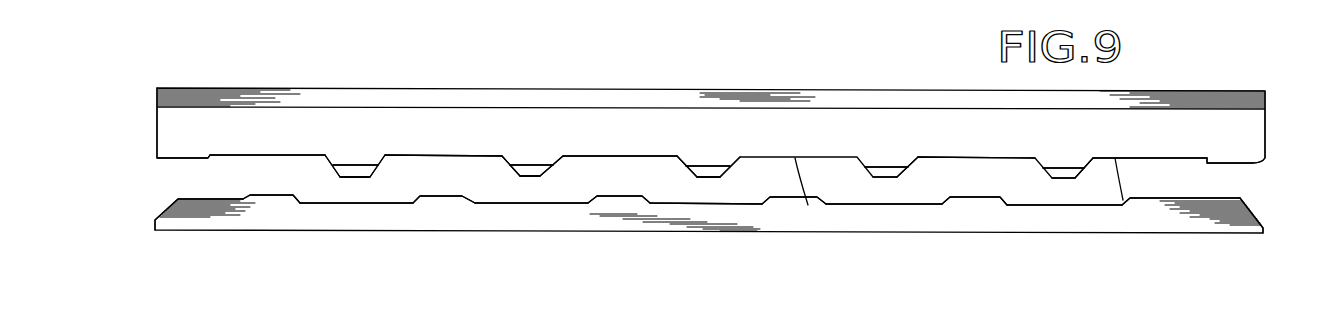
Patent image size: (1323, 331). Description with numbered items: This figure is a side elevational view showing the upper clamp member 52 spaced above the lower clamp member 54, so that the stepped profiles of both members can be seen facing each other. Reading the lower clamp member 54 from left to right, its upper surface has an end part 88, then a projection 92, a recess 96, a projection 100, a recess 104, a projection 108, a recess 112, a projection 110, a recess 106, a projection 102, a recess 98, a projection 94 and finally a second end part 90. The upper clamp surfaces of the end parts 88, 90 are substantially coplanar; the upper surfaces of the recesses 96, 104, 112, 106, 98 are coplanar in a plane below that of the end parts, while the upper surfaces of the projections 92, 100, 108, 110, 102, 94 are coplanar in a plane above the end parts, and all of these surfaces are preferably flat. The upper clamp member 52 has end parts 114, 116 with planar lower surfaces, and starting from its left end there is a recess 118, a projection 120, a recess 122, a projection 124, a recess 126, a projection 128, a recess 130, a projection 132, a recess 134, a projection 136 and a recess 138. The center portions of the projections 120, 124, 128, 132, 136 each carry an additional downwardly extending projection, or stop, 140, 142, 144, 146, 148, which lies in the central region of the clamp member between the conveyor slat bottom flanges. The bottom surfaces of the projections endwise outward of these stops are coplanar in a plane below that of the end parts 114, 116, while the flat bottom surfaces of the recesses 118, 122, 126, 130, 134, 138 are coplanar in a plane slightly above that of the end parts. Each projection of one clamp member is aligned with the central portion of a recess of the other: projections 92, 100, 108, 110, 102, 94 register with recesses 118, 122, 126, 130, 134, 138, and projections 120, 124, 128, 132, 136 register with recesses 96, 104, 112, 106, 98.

The upper clamp member 52 is at (819, 88).
The lower clamp member 54 is at (803, 237).
The end part 88 is at (216, 199).
The end part 90 is at (1220, 202).
The projection 92 is at (270, 197).
The projection 94 is at (1162, 198).
The recess 96 is at (402, 193).
The recess 98 is at (1028, 204).
The projection 100 is at (465, 195).
The projection 102 is at (963, 203).
The recess 104 is at (577, 203).
The recess 106 is at (857, 203).
The projection 108 is at (620, 195).
The projection 110 is at (818, 198).
The recess 112 is at (758, 204).
The end part 114 is at (175, 159).
The end part 116 is at (1258, 166).
The recess 118 is at (232, 157).
The projection 120 is at (375, 164).
The recess 122 is at (457, 158).
The projection 124 is at (521, 170).
The recess 126 is at (660, 158).
The projection 128 is at (721, 169).
The recess 130 is at (808, 205).
The projection 132 is at (900, 175).
The recess 134 is at (1013, 160).
The projection 136 is at (1078, 176).
The recess 138 is at (1123, 200).
The additional projection 140 is at (350, 177).
The additional projection 142 is at (538, 178).
The additional projection 144 is at (705, 182).
The additional projection 146 is at (885, 178).
The additional projection 148 is at (1055, 178).